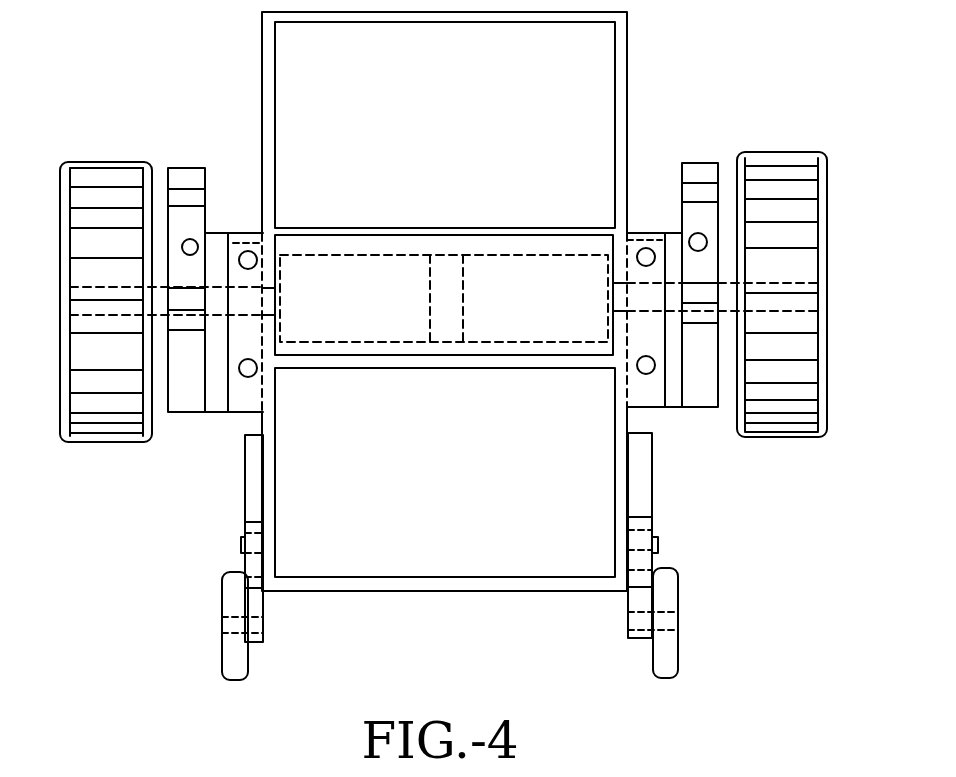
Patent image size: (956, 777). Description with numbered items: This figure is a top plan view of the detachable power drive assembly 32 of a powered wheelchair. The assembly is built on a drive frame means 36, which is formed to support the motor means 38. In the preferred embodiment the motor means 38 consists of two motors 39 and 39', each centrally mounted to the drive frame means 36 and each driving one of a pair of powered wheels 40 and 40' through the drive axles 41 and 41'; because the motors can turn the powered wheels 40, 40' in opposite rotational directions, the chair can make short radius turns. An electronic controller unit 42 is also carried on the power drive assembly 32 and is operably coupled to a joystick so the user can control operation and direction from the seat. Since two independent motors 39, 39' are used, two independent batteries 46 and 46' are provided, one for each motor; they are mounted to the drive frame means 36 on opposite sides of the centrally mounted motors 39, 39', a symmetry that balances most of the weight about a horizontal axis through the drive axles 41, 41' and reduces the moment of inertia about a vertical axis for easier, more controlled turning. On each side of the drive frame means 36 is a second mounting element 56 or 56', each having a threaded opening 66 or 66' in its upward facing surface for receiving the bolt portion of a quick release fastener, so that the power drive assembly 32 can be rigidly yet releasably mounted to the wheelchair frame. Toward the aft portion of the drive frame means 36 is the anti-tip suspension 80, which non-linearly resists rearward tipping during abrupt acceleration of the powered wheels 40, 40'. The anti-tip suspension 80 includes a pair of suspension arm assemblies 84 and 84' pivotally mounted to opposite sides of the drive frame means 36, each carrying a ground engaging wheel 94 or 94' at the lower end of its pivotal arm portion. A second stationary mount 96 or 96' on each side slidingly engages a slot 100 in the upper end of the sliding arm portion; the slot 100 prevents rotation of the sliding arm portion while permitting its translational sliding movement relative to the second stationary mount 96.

The power drive assembly 32 is at (446, 324).
The drive frame means 36 is at (256, 96).
The motor means 38 is at (468, 364).
The motor 39 is at (444, 241).
The motor 39' is at (461, 173).
The powered wheel 40 is at (97, 271).
The powered wheel 40' is at (788, 274).
The drive axle 41 is at (152, 385).
The drive axle 41' is at (736, 375).
The electronic controller unit 42 is at (470, 235).
The battery 46 is at (445, 504).
The battery 46' is at (503, 121).
The second mounting element 56 is at (188, 242).
The motor 56' is at (698, 244).
The threaded opening 66 is at (217, 191).
The pivot pin 66' is at (674, 192).
The anti-tip suspension 80 is at (275, 655).
The suspension arm assembly 84 is at (199, 538).
The suspension arm assembly 84' is at (714, 535).
The ground engaging wheel 94 is at (181, 646).
The caster wheel 94' is at (727, 627).
The second stationary mount 96 is at (180, 535).
The caster pivot 96' is at (723, 537).
The slot 100 is at (247, 563).